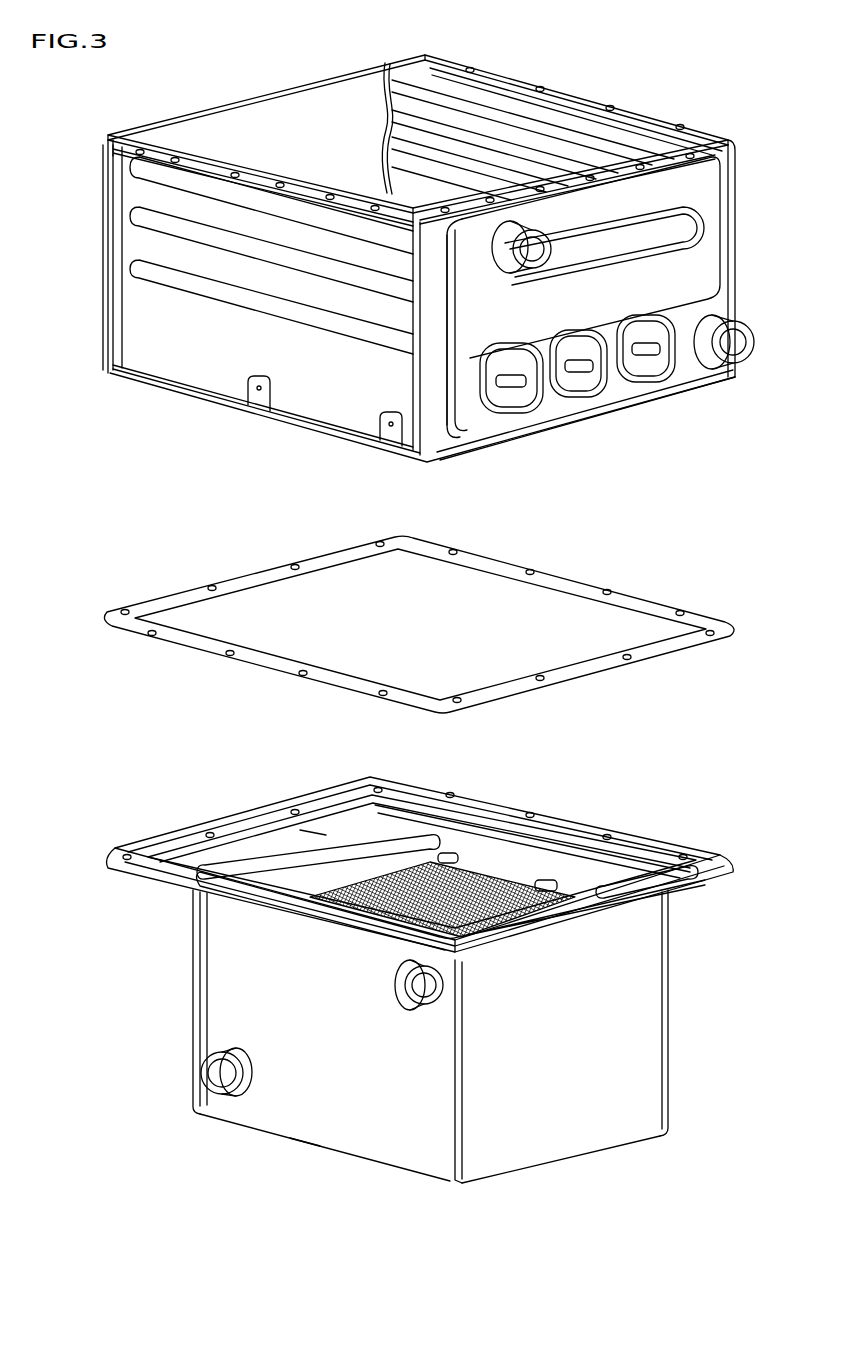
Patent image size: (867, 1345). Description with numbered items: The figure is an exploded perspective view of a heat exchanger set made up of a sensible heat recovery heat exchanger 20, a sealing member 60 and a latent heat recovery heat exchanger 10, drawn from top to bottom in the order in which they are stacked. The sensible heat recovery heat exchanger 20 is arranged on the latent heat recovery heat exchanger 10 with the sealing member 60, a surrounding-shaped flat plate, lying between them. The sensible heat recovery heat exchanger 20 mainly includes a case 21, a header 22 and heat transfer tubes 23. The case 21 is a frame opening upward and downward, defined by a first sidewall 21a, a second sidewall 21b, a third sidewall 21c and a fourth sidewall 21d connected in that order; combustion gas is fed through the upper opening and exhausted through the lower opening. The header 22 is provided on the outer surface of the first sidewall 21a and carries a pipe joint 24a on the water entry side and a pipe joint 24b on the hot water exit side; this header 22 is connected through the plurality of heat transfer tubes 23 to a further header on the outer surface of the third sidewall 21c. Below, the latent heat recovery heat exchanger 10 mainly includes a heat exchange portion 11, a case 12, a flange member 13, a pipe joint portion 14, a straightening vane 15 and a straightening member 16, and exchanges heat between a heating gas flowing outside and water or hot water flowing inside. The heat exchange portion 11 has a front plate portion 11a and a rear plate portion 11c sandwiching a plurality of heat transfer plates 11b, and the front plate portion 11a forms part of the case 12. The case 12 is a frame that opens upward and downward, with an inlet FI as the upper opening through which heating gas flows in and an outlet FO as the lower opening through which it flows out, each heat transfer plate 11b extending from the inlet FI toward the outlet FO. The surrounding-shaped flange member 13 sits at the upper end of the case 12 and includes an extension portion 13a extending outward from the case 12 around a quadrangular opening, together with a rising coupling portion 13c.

The latent heat recovery heat exchanger 10 is at (215, 1018).
The heat exchange portion 11 is at (228, 945).
The front plate portion 11a is at (228, 972).
The heat transfer plates 11b is at (482, 893).
The rear plate portion 11c is at (540, 888).
The case 12 is at (650, 1038).
The flange member 13 is at (112, 860).
The extension portion 13a is at (228, 828).
The rising coupling portion 13c is at (282, 845).
The pipe joint portion 14 is at (205, 1073).
The straightening vane 15 is at (390, 850).
The straightening member 16 is at (603, 883).
The sensible heat recovery heat exchanger 20 is at (175, 248).
The case 21 is at (310, 110).
The first sidewall 21a is at (467, 223).
The second sidewall 21b is at (160, 316).
The third sidewall 21c is at (262, 122).
The fourth sidewall 21d is at (582, 167).
The header 22 is at (717, 177).
The heat transfer tube 23 is at (160, 177).
The pipe joint on the water entry side 24a is at (738, 340).
The pipe joint on the hot water exit side 24b is at (722, 192).
The sealing member 60 is at (703, 620).
The inlet FI is at (326, 835).
The outlet FO is at (305, 1145).